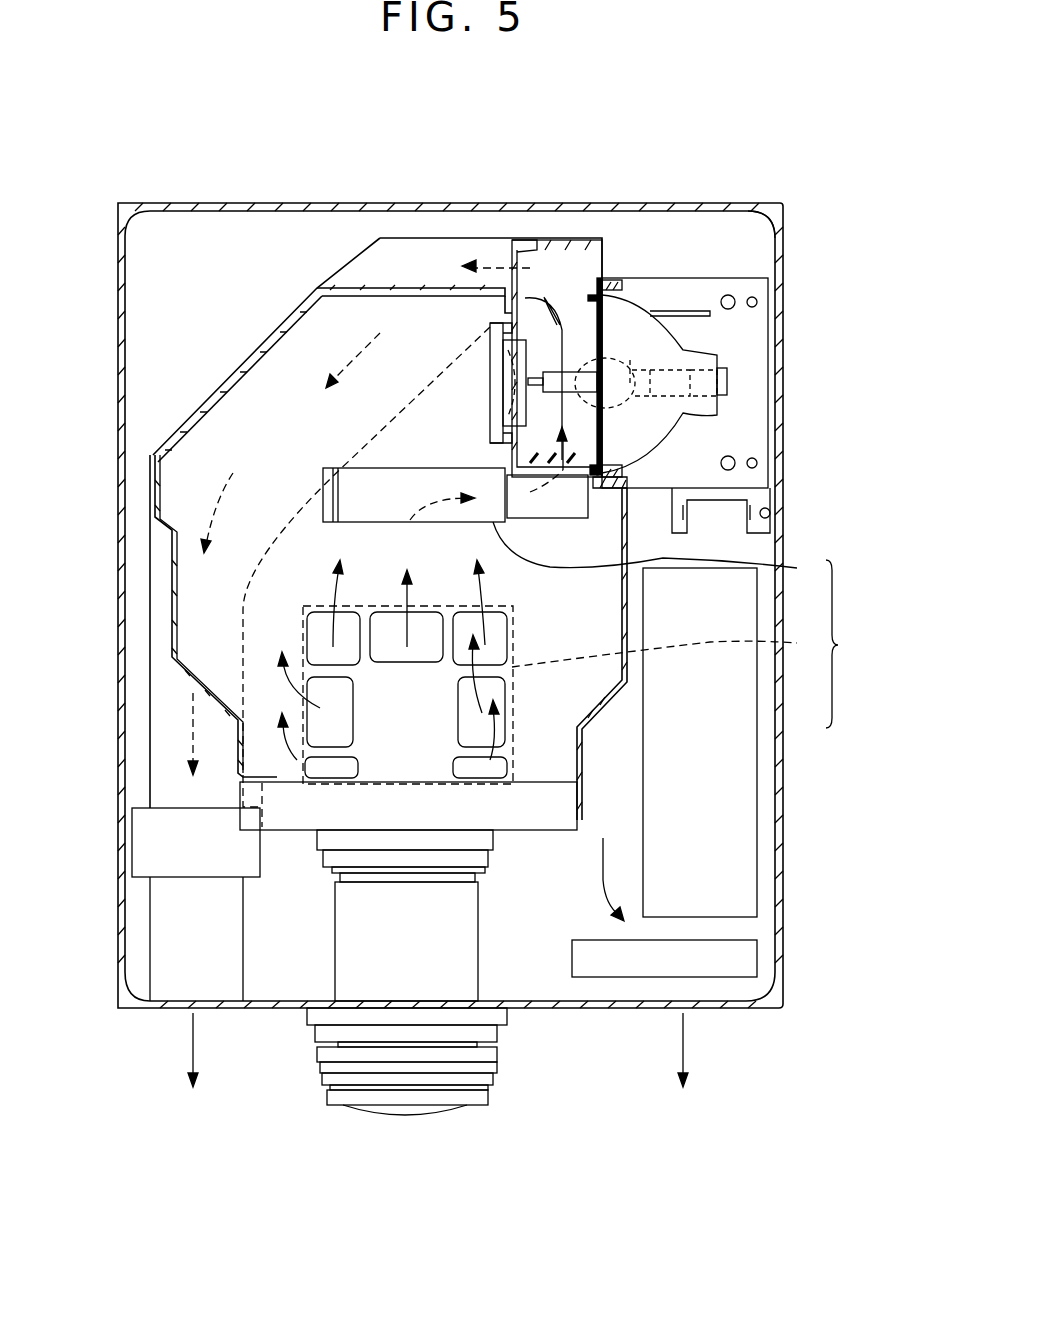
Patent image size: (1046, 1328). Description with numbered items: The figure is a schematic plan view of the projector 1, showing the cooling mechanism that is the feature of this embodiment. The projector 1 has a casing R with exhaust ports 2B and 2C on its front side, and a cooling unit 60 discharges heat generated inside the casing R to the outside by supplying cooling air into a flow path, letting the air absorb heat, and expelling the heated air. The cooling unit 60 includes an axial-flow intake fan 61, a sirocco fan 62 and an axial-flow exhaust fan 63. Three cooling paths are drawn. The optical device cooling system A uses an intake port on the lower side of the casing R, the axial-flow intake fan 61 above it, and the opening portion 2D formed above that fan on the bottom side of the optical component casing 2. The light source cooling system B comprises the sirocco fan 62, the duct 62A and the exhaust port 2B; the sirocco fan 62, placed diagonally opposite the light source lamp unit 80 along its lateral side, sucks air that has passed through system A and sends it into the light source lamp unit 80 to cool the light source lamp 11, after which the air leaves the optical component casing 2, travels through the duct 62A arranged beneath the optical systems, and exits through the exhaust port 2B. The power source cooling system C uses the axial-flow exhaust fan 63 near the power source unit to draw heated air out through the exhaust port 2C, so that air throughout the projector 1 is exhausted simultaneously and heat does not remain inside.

The projector 1 is at (467, 176).
The optical component casing 2 is at (222, 384).
The exhaust port 2B is at (158, 1010).
The exhaust port 2C is at (737, 1010).
The opening portion 2D is at (310, 630).
The light source lamp 11 is at (578, 381).
The light source lamp unit 80 is at (742, 418).
The cooling unit 60 is at (847, 644).
The axial-flow intake fan 61 is at (669, 742).
The sirocco fan 62 is at (790, 568).
The duct 62A is at (148, 715).
The axial-flow exhaust fan 63 is at (668, 950).
The casing R is at (783, 240).
The optical device cooling system A is at (410, 572).
The light source cooling system B is at (570, 450).
The power source cooling system C is at (600, 880).